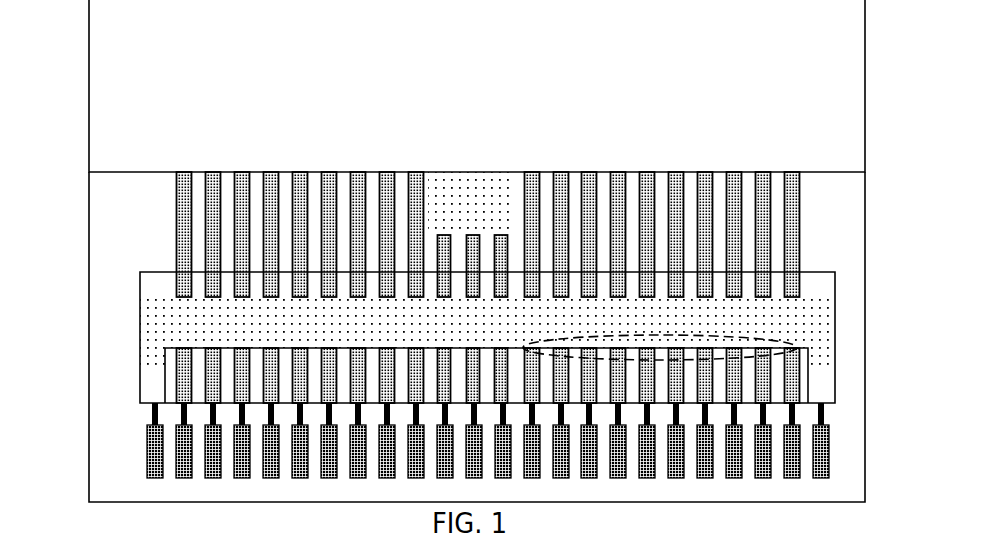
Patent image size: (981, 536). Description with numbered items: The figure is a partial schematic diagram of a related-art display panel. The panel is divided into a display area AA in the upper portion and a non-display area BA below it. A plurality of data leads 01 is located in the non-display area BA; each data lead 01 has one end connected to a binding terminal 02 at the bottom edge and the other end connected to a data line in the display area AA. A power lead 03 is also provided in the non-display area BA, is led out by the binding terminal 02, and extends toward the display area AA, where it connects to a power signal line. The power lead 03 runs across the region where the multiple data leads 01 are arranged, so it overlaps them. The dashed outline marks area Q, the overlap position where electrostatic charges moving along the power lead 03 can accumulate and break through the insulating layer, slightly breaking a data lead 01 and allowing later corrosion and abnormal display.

The display area AA is at (132, 96).
The non-display area BA is at (122, 235).
The data lead 01 is at (790, 247).
The binding terminal 02 is at (162, 448).
The power lead 03 is at (165, 305).
The area Q is at (770, 337).